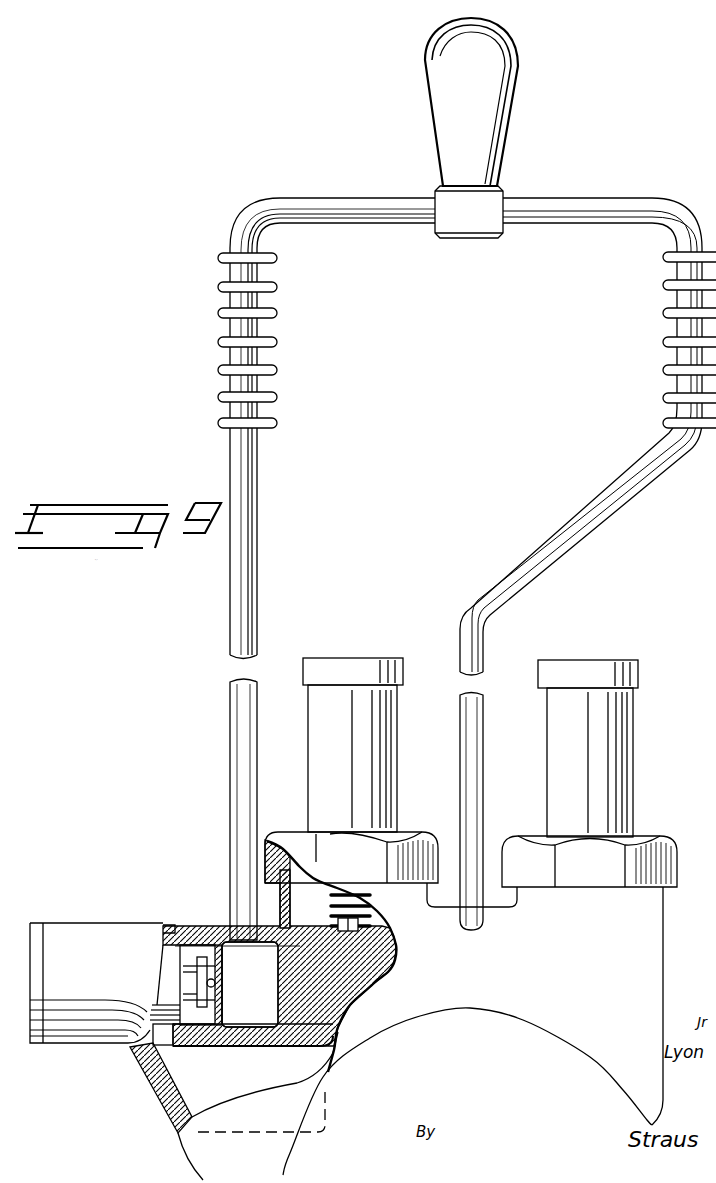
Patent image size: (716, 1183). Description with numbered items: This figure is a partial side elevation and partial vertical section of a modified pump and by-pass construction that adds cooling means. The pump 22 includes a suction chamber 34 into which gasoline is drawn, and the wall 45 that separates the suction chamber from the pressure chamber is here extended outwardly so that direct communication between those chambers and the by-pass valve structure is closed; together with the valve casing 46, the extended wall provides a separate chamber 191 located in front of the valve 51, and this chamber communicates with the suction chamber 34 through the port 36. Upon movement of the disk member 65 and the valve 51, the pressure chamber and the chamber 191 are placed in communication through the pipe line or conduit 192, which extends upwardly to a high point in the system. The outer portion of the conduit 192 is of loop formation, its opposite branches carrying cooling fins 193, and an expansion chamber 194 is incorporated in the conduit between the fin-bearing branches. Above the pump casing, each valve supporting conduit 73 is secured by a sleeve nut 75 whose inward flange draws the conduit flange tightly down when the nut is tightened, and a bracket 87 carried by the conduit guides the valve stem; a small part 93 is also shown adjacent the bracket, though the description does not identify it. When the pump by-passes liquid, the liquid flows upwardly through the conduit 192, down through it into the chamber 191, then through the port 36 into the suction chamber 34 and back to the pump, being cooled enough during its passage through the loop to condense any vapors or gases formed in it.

The expansion chamber 194 is at (458, 137).
The cooling fins 193 is at (274, 420).
The pipe line or conduit 192 is at (596, 502).
The separate chamber 191 is at (250, 853).
The valve supporting conduit 73 is at (412, 757).
The sleeve nut 75 is at (405, 840).
The pump 22 is at (420, 1033).
The wall 45 is at (376, 962).
The valve casing 46 is at (210, 925).
The valve 51 is at (208, 968).
The bracket 87 is at (372, 907).
The spring seat 93 is at (372, 925).
The port 36 is at (163, 1033).
The disk member 65 is at (197, 1032).
The suction chamber 34 is at (245, 1046).